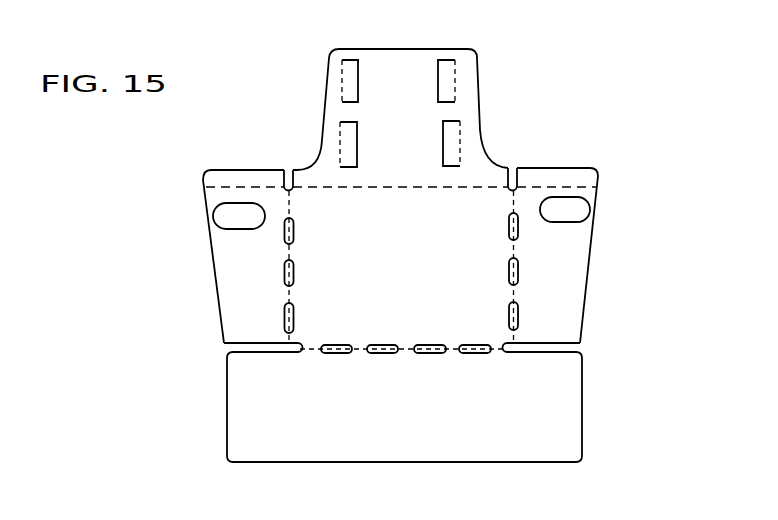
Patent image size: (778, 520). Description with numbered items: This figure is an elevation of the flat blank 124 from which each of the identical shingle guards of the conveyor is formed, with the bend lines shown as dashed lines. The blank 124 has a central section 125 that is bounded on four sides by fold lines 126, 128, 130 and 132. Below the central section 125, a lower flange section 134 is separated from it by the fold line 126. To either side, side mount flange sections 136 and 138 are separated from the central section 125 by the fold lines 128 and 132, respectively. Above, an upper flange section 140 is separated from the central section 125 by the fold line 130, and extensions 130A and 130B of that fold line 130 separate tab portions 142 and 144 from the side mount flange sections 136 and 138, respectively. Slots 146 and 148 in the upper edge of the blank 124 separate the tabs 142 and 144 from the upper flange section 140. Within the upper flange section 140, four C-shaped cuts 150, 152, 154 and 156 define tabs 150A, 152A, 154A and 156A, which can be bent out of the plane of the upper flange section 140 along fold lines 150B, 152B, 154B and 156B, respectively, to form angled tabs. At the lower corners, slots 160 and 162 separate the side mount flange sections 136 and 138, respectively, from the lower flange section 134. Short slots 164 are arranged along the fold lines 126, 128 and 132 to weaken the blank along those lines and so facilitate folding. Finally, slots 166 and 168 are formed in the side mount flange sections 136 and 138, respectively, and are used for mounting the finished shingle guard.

The blank 124 is at (722, 274).
The central section 125 is at (470, 264).
The fold line 126 is at (313, 350).
The fold line 128 is at (290, 298).
The fold line 130 is at (398, 197).
The extension of fold line 130A is at (237, 186).
The extension of fold line 130B is at (564, 185).
The fold line 132 is at (518, 248).
The lower flange section 134 is at (553, 414).
The side mount flange section 136 is at (233, 300).
The side mount flange section 138 is at (575, 302).
The upper flange section 140 is at (380, 49).
The tab portion 142 is at (205, 176).
The tab portion 144 is at (586, 173).
The slot 146 is at (291, 168).
The slot 148 is at (517, 167).
The C-shaped cut 150 is at (359, 100).
The tab 150A is at (347, 58).
The fold line 150B is at (338, 74).
The C-shaped cut 152 is at (352, 153).
The tab 152A is at (357, 166).
The fold line 152B is at (338, 160).
The C-shaped cut 154 is at (438, 80).
The tab 154A is at (448, 87).
The fold line 154B is at (458, 68).
The C-shaped cut 156 is at (444, 155).
The tab 156A is at (452, 147).
The fold line 156B is at (461, 127).
The slot 160 is at (234, 352).
The slot 162 is at (566, 351).
The short slots 164 is at (476, 354).
The slot 166 is at (228, 214).
The slot 168 is at (563, 221).